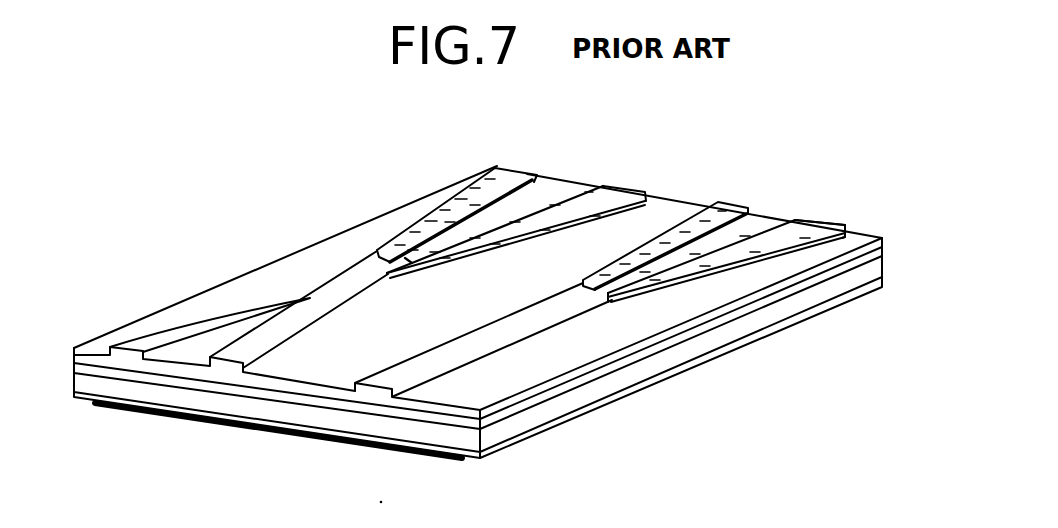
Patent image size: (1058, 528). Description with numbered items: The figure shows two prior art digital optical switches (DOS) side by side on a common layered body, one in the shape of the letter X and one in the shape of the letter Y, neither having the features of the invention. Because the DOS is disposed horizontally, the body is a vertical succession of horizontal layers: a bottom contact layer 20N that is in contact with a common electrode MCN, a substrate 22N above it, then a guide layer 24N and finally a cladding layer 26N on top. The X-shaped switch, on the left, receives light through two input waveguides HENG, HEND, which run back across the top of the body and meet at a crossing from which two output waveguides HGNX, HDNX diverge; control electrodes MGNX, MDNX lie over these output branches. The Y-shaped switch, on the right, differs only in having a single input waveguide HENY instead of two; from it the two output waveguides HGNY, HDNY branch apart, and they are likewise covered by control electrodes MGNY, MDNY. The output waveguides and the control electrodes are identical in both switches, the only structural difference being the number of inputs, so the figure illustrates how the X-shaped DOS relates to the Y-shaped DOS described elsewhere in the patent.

The bottom contact layer 20N is at (549, 428).
The substrate 22N is at (610, 388).
The guide layer 24N is at (702, 342).
The cladding layer 26N is at (738, 310).
The common electrode MCN is at (294, 436).
The input waveguide HENG is at (160, 318).
The input waveguide HEND is at (292, 314).
The input waveguide HENY is at (426, 360).
The control electrode MGNX is at (413, 237).
The output waveguide HGNX is at (540, 177).
The control electrode MDNX is at (478, 242).
The output waveguide HDNX is at (662, 194).
The control electrode MGNY is at (718, 200).
The output waveguide HGNY is at (752, 207).
The control electrode MDNY is at (820, 216).
The output waveguide HDNY is at (820, 238).